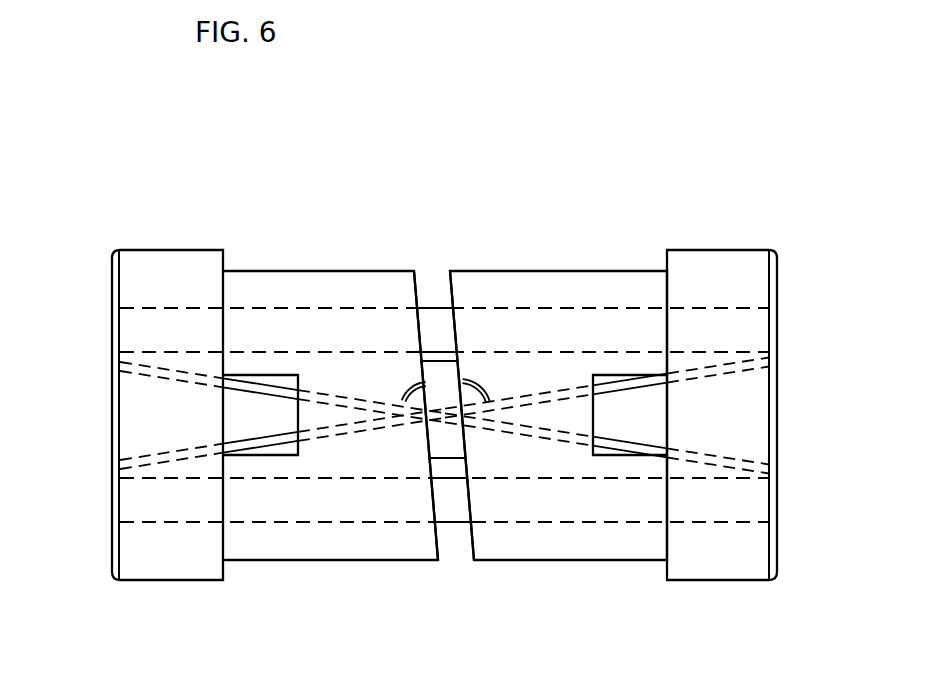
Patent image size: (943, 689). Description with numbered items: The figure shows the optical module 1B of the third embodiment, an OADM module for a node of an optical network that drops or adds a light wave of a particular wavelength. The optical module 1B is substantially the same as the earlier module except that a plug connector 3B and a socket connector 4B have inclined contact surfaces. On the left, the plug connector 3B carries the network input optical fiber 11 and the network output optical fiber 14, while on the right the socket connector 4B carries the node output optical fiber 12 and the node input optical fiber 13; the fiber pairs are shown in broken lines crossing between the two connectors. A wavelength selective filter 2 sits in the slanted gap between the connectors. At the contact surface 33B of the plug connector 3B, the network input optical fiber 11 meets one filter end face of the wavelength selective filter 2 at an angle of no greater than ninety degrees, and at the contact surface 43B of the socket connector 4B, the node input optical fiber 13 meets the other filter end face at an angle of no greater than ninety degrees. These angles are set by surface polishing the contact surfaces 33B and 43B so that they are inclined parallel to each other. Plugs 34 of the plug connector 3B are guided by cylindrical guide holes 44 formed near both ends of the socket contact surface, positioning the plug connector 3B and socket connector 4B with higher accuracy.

The optical module 1B is at (587, 211).
The wavelength selective filter 2 is at (428, 375).
The plug connector 3B is at (198, 250).
The socket connector 4B is at (712, 250).
The network input optical fiber 11 is at (122, 363).
The node output optical fiber 12 is at (765, 465).
The node input optical fiber 13 is at (765, 365).
The network output optical fiber 14 is at (122, 466).
The contact surface 33B is at (447, 560).
The plug 34 is at (444, 320).
The contact surface 43B is at (465, 560).
The guide hole 44 is at (522, 300).